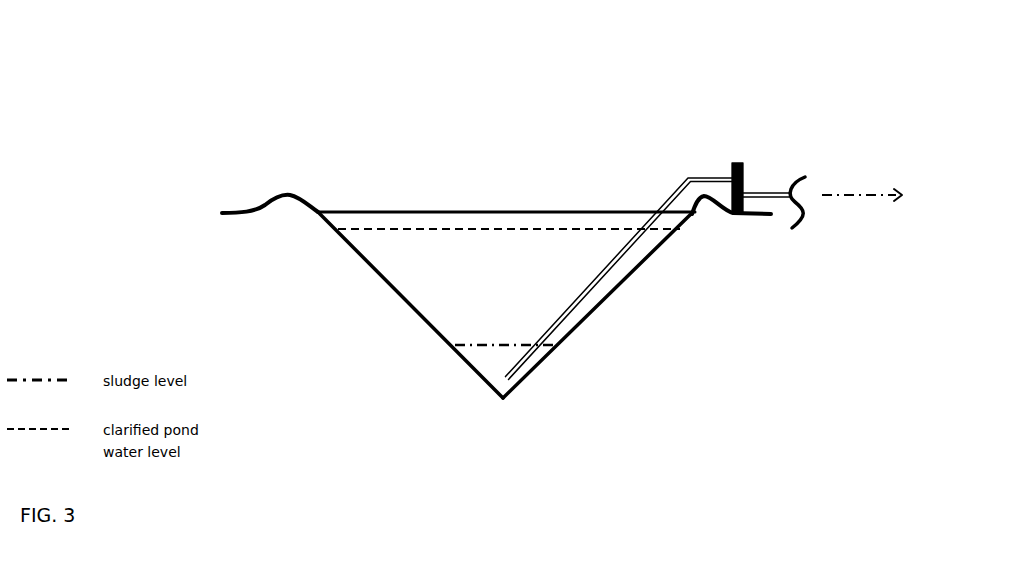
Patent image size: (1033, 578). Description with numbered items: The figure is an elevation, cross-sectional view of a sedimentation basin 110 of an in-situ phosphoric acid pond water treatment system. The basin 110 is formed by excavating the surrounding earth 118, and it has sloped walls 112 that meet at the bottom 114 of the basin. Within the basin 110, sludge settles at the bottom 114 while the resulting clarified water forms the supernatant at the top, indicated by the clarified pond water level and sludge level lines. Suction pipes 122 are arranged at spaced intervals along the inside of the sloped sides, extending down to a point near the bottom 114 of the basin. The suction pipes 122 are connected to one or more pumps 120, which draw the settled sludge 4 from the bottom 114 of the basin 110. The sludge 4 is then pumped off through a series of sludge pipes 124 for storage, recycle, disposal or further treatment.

The sedimentation basin 110 is at (273, 96).
The surrounding earth 118 is at (240, 212).
The sloped walls 112 is at (407, 312).
The bottom of the basin 114 is at (500, 400).
The suction pipes 122 is at (573, 309).
The pumps 120 is at (738, 163).
The sludge pipes 124 is at (772, 193).
The settled sludge 4 is at (862, 178).